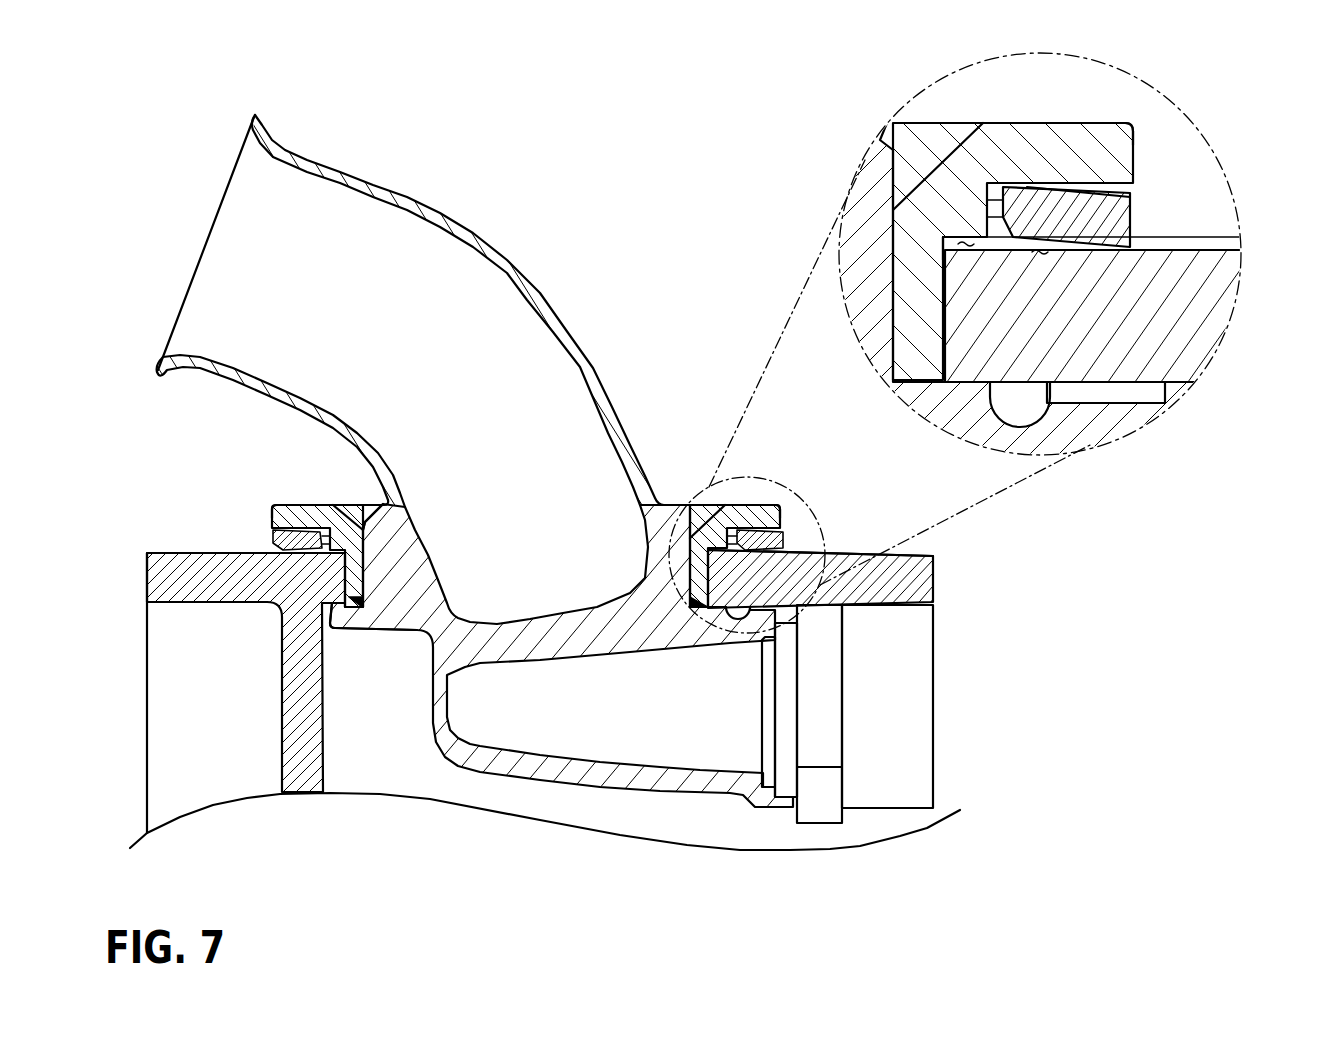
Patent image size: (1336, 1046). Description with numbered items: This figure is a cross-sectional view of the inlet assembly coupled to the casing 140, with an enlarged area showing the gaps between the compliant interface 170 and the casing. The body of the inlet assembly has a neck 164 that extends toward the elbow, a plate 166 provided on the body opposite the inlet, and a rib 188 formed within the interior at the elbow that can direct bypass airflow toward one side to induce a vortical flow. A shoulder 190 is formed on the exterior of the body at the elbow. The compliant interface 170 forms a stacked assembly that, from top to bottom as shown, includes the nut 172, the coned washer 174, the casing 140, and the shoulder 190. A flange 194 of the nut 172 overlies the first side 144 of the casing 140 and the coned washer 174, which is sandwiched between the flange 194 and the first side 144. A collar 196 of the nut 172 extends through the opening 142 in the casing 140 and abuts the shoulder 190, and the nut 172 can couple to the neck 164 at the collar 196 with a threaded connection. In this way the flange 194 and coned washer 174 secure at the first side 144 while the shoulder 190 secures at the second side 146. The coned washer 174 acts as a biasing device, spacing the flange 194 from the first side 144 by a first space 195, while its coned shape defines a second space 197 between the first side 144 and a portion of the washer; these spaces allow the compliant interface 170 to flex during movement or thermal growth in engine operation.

The casing 140 is at (188, 570).
The opening 142 is at (360, 607).
The first side 144 is at (890, 553).
The second side 146 is at (168, 602).
The neck 164 is at (423, 533).
The plate 166 is at (834, 817).
The compliant interface 170 is at (266, 498).
The nut 172 is at (345, 498).
The coned washer 174 is at (273, 548).
The rib 188 is at (543, 660).
The shoulder 190 is at (348, 617).
The flange 194 is at (272, 520).
The first space 195 is at (946, 264).
The collar 196 is at (350, 577).
The second space 197 is at (1095, 238).